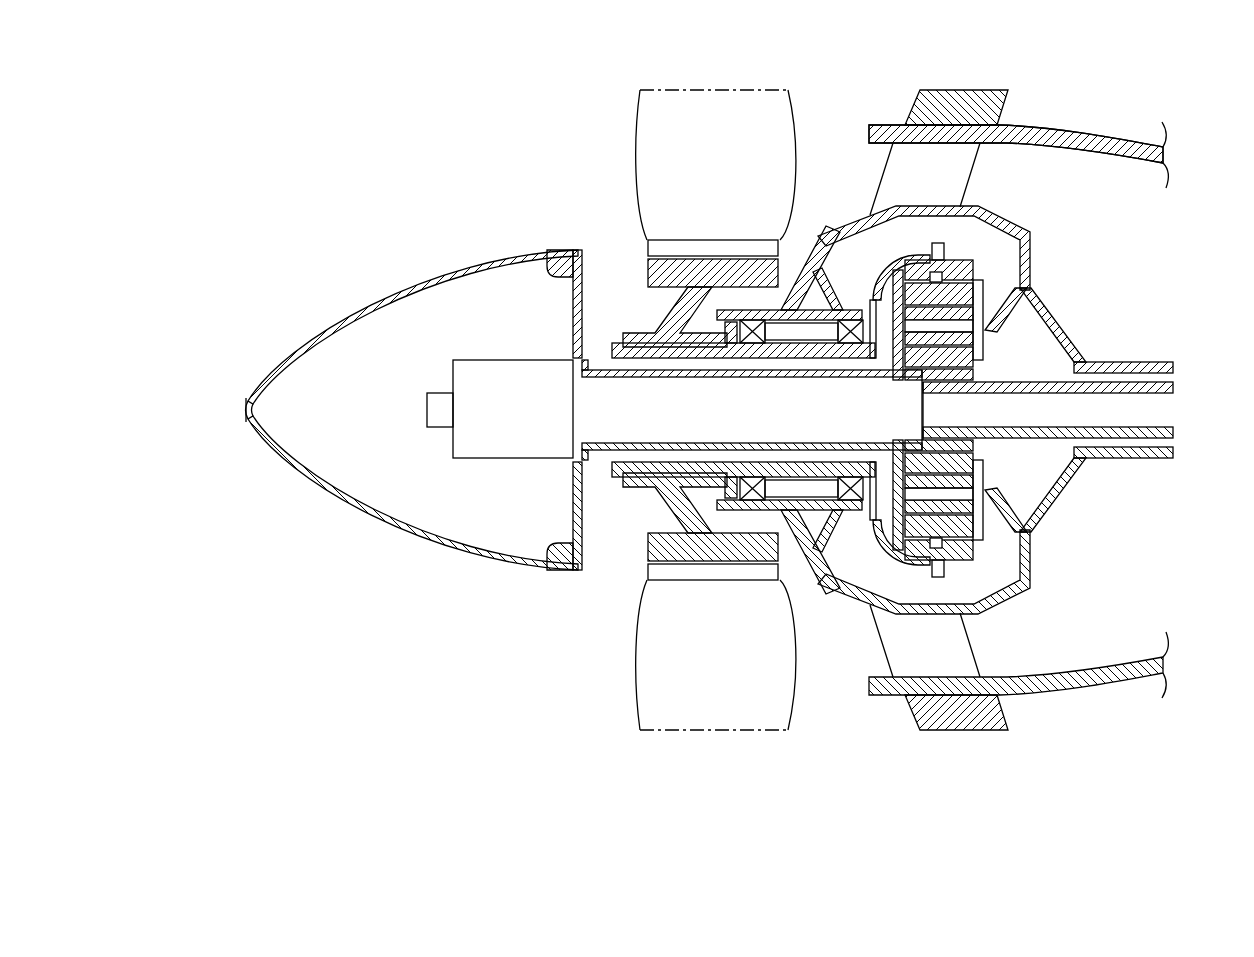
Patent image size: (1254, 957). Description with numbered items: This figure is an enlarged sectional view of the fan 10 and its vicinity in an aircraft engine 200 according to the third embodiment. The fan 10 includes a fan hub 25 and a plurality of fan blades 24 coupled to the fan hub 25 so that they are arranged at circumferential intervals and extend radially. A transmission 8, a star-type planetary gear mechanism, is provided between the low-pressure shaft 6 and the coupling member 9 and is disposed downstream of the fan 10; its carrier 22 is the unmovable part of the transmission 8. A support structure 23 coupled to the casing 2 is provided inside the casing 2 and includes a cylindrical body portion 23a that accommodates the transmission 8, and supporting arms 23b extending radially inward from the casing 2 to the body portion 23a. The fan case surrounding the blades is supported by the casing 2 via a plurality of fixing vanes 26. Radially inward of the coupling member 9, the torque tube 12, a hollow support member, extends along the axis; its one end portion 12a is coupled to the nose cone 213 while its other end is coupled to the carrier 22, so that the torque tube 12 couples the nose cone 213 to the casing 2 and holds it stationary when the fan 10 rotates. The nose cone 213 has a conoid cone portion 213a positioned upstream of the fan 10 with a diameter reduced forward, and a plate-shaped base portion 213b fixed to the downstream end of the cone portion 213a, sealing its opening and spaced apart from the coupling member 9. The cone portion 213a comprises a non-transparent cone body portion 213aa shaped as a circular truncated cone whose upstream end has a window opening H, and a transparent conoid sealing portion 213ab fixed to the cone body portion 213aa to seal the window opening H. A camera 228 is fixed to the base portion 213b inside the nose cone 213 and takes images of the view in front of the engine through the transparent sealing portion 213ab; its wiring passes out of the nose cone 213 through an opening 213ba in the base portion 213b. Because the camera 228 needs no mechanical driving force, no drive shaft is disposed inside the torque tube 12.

The aircraft engine 200 is at (232, 210).
The nose cone 213 is at (290, 345).
The cone portion 213a is at (437, 263).
The cone body portion 213aa is at (368, 527).
The sealing portion 213ab is at (262, 445).
The window opening H is at (277, 450).
The base portion 213b is at (580, 576).
The opening 213ba is at (563, 387).
The camera 228 is at (513, 462).
The torque tube 12 is at (587, 452).
The one end portion 12a is at (612, 343).
The fan hub 25 is at (650, 323).
The fan blades 24 is at (790, 138).
The fan 10 is at (605, 148).
The coupling member 9 is at (810, 490).
The transmission 8 is at (960, 250).
The carrier 22 is at (980, 486).
The support structure 23 is at (1068, 586).
The body portion 23a is at (993, 610).
The supporting arms 23b is at (973, 653).
The fixing vanes 26 is at (1005, 726).
The casing 2 is at (1055, 125).
The low-pressure shaft 6 is at (1027, 380).